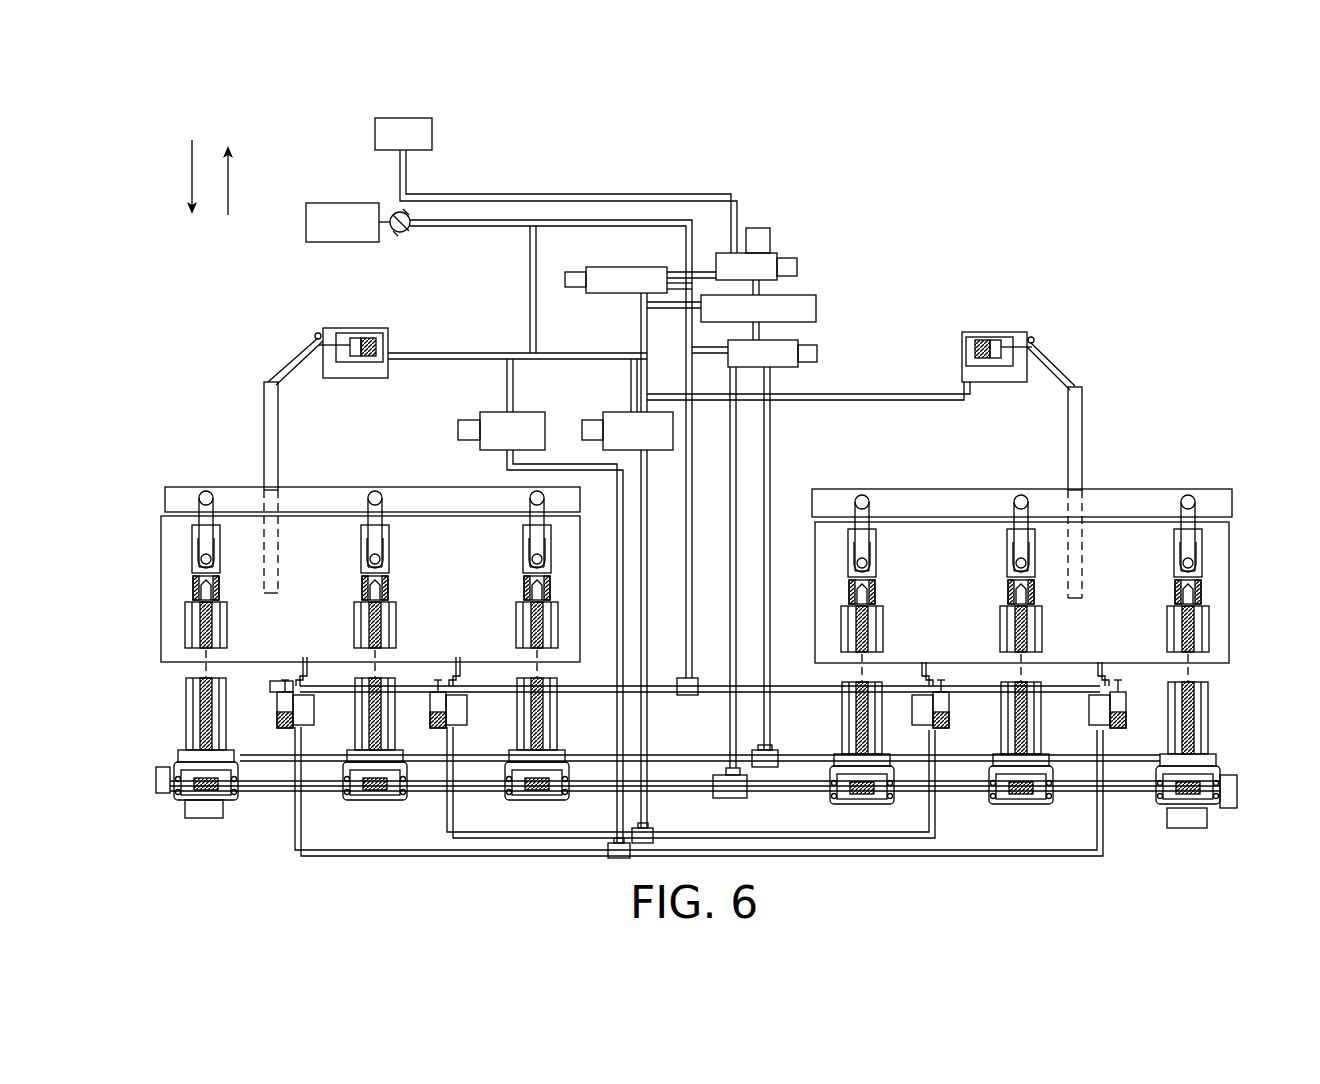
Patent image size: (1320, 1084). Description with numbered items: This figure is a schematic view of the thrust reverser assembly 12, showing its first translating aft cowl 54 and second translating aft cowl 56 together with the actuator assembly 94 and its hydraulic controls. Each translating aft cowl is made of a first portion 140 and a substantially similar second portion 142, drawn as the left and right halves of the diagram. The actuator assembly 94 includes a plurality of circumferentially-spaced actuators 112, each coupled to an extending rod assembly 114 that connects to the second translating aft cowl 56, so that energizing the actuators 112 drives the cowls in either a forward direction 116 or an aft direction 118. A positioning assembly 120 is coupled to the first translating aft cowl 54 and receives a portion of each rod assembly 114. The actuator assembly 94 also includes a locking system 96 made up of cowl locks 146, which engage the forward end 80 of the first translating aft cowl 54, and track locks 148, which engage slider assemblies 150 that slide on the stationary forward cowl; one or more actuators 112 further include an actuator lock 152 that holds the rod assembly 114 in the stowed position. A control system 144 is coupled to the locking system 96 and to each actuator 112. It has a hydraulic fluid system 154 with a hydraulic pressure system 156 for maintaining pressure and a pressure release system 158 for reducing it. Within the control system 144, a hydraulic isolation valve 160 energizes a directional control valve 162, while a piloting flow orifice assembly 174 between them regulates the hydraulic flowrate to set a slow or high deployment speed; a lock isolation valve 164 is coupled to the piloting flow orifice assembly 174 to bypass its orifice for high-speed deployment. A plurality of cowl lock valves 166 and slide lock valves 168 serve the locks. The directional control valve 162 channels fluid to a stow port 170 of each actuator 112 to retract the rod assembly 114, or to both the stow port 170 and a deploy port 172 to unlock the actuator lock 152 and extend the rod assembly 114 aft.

The thrust reverser assembly 12 is at (1060, 166).
The first translating aft cowl 54 is at (190, 560).
The second translating aft cowl 56 is at (230, 487).
The forward end 80 is at (175, 663).
The actuator assembly 94 is at (881, 155).
The locking system 96 is at (292, 312).
The actuator 112 is at (190, 745).
The rod assembly 114 is at (195, 600).
The forward direction 116 is at (192, 172).
The aft direction 118 is at (228, 186).
The positioning assembly 120 is at (198, 523).
The first portion 140 is at (240, 388).
The second portion 142 is at (1118, 372).
The control system 144 is at (698, 151).
The cowl lock 146 is at (300, 725).
The track lock 148 is at (360, 328).
The slider assembly 150 is at (278, 432).
The actuator lock 152 is at (163, 793).
The hydraulic fluid system 154 is at (555, 188).
The hydraulic pressure system 156 is at (405, 118).
The pressure release system 158 is at (345, 203).
The hydraulic isolation valve 160 is at (786, 242).
The directional control valve 162 is at (795, 367).
The lock isolation valve 164 is at (615, 267).
The cowl lock valve 166 is at (480, 412).
The slide lock valve 168 is at (388, 352).
The stow port 170 is at (275, 693).
The deploy port 172 is at (236, 802).
The piloting flow orifice assembly 174 is at (806, 295).